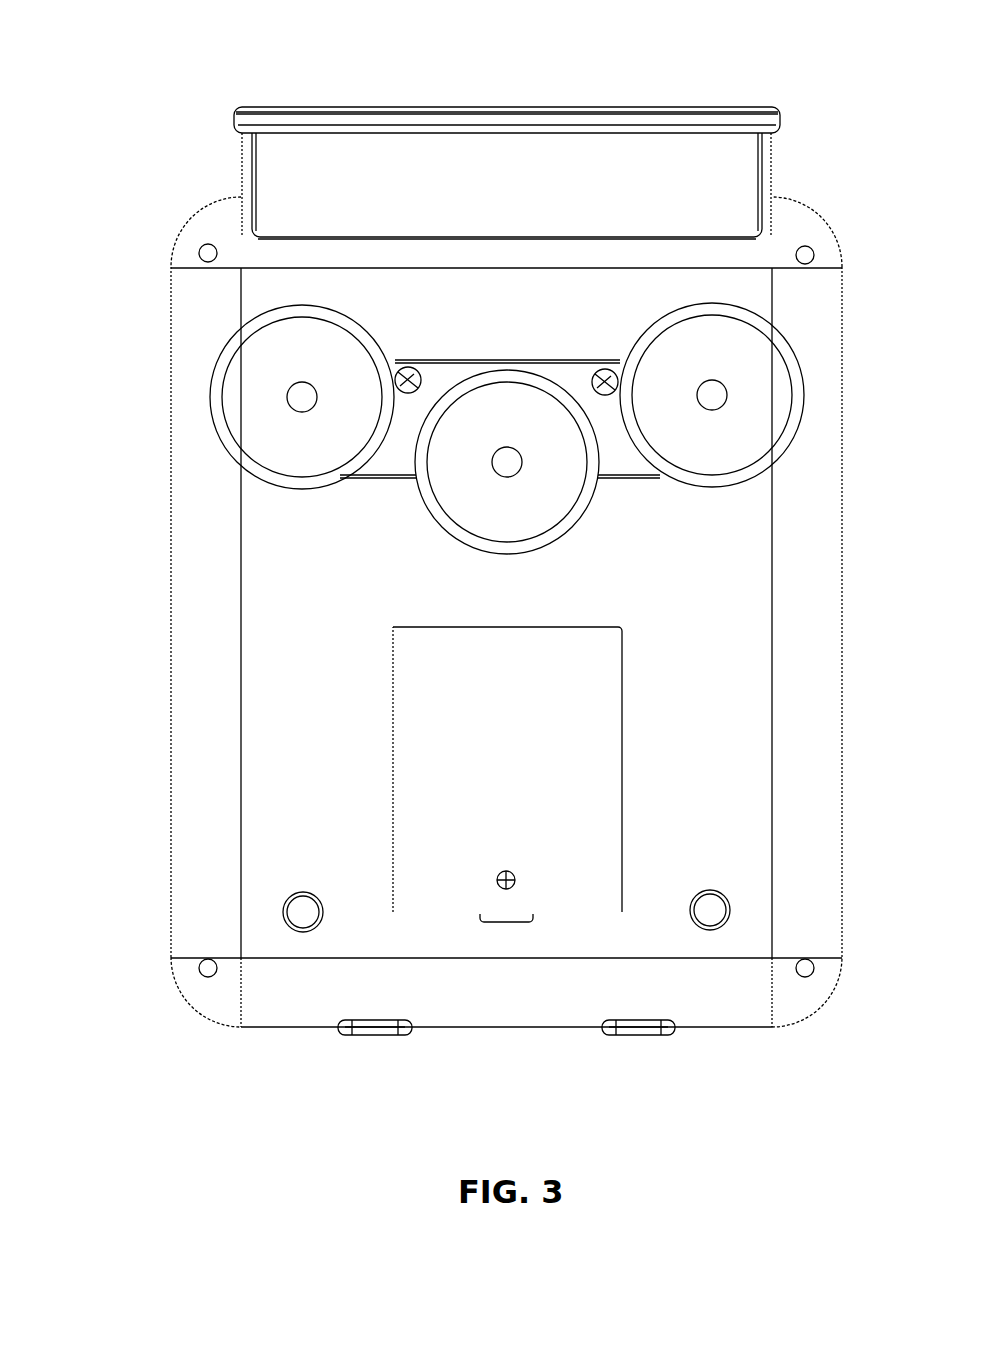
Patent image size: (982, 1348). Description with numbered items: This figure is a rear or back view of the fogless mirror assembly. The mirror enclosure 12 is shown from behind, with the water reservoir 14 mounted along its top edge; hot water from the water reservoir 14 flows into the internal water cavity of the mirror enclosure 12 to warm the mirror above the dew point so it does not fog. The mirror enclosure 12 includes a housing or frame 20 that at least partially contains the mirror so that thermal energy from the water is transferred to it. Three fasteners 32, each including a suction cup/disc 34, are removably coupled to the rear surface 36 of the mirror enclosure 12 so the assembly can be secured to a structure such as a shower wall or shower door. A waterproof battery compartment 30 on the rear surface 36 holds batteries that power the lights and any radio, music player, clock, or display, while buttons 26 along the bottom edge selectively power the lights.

The mirror enclosure 12 is at (150, 224).
The water reservoir 14 is at (213, 100).
The frame 20 is at (170, 560).
The buttons 26 is at (372, 1035).
The waterproof battery compartment 30 is at (395, 735).
The fasteners 32 is at (341, 487).
The suction cups/discs 34 is at (369, 318).
The rear surface 36 is at (290, 780).